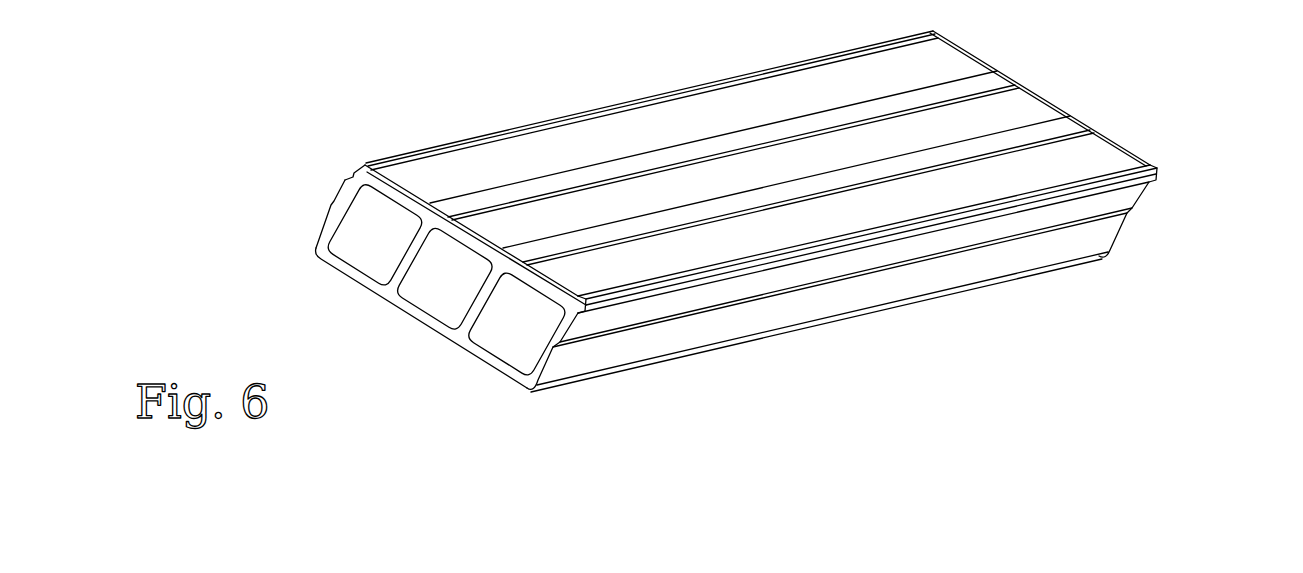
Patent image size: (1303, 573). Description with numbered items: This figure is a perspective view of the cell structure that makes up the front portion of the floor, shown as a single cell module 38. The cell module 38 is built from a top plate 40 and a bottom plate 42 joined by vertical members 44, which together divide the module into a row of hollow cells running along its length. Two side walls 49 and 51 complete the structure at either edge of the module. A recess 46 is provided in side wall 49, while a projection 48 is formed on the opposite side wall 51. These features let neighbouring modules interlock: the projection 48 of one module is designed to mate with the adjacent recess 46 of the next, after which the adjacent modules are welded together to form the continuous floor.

The cell module 38 is at (749, 230).
The top plate 40 is at (1027, 113).
The bottom plate 42 is at (432, 322).
The vertical members 44 is at (405, 267).
The recess 46 is at (891, 301).
The projection 48 is at (350, 177).
The side wall 49 is at (638, 348).
The side wall 51 is at (315, 236).